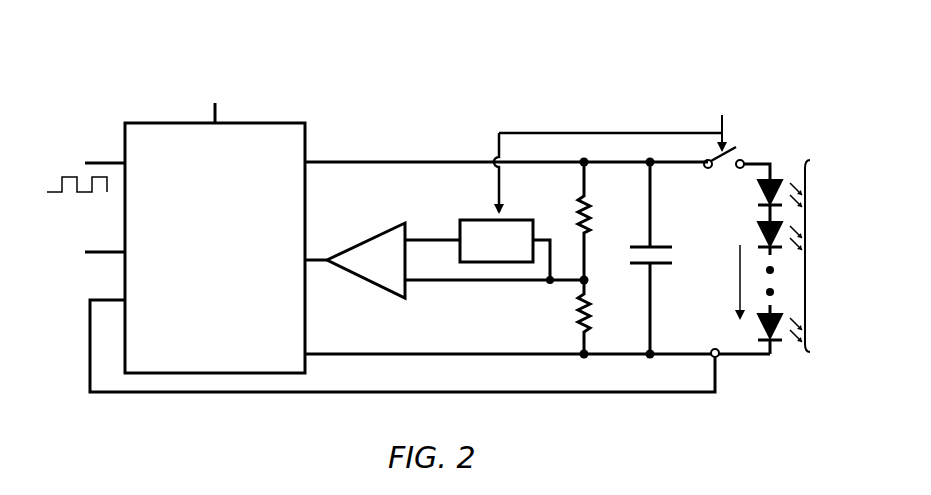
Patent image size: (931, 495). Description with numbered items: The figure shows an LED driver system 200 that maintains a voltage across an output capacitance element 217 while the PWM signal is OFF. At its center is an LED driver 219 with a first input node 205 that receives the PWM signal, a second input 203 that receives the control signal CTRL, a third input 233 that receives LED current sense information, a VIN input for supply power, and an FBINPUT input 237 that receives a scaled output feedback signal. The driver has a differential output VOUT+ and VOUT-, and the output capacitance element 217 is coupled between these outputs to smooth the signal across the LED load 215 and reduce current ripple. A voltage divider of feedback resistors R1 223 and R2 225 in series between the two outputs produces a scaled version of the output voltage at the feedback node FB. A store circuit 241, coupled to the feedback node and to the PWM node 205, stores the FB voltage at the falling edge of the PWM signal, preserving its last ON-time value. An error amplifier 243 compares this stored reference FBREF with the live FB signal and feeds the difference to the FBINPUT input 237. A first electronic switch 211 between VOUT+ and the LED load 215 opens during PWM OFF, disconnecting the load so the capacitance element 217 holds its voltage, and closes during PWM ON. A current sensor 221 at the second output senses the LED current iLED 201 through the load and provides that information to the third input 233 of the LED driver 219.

The LED driver system 200 is at (108, 31).
The current iLED 201 is at (742, 273).
The second input 203 is at (112, 251).
The first input node 205 is at (110, 162).
The first electronic switch 211 is at (742, 143).
The LED load 215 is at (805, 248).
The output capacitance element 217 is at (660, 264).
The LED driver 219 is at (245, 123).
The current sensor 221 is at (720, 359).
The feedback resistor R1 223 is at (576, 197).
The feedback resistor R2 225 is at (576, 309).
The third input 233 is at (103, 299).
The FBINPUT input 237 is at (310, 266).
The store circuit 241 is at (473, 218).
The error amplifier 243 is at (398, 223).